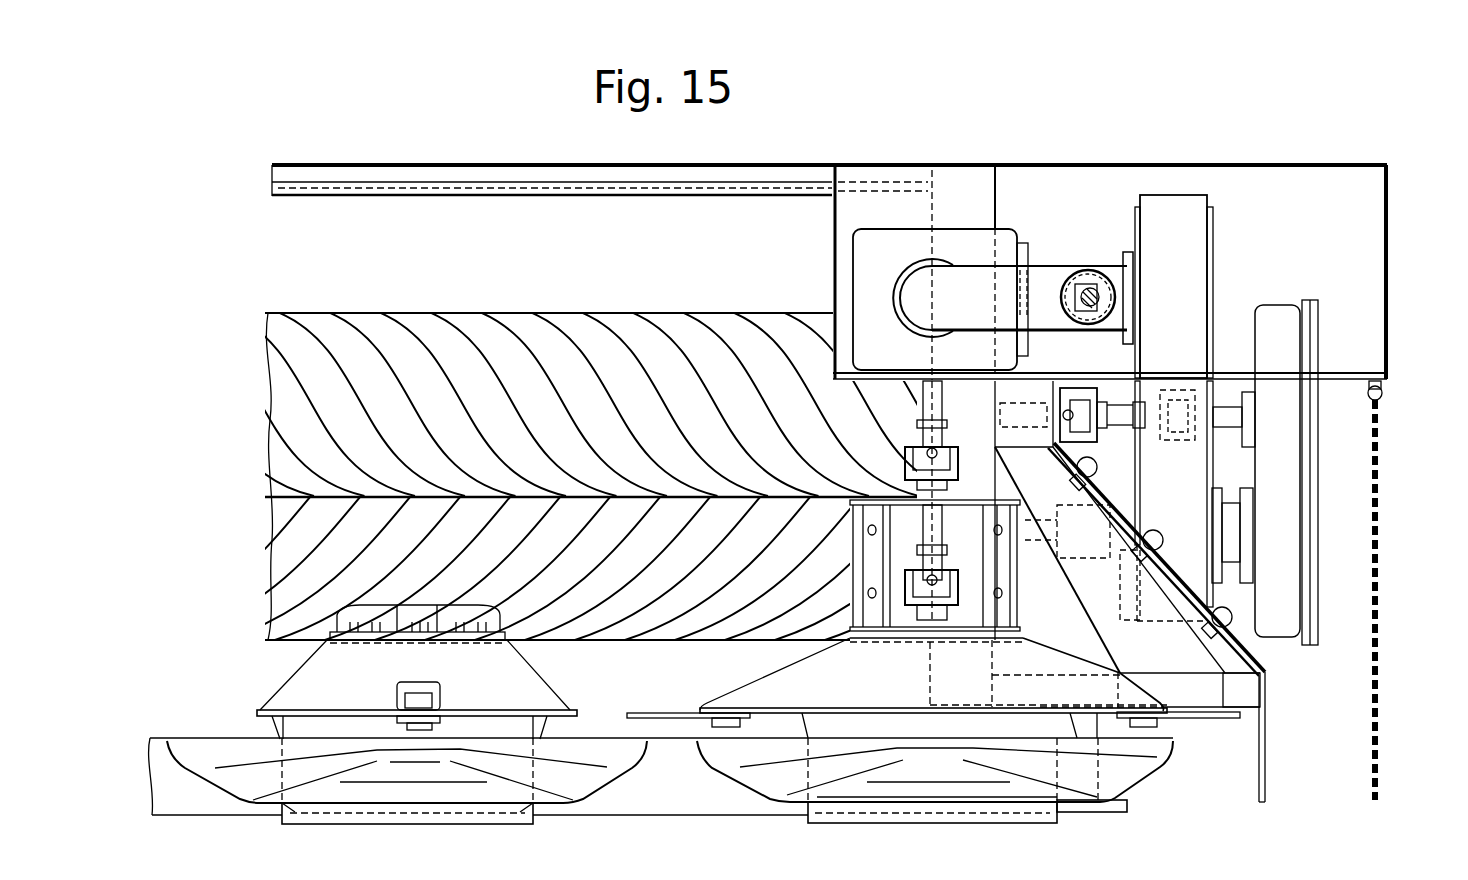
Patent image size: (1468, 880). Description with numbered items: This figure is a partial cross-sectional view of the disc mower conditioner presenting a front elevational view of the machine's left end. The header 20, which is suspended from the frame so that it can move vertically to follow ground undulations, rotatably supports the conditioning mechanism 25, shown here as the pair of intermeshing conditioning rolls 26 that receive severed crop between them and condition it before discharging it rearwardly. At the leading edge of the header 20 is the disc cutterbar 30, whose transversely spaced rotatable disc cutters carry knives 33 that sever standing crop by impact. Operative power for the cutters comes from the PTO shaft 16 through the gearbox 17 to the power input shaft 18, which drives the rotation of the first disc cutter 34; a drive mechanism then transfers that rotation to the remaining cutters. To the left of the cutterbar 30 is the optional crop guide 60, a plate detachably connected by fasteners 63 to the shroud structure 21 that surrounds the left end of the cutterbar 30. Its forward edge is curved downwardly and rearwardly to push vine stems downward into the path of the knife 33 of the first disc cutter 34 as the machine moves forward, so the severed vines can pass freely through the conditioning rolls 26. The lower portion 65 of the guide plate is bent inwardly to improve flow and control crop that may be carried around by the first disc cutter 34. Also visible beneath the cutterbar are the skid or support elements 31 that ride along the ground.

The PTO shaft 16 is at (1095, 297).
The gearbox 17 is at (995, 232).
The power input shaft 18 is at (945, 437).
The header 20 is at (1237, 133).
The shroud structure 21 is at (1247, 660).
The conditioning mechanism 25 is at (243, 312).
The conditioning rolls 26 is at (268, 560).
The disc cutterbar 30 is at (240, 698).
The base block 31 is at (402, 816).
The knives 33 is at (670, 720).
The first disc cutter 34 is at (945, 695).
The crop guide 60 is at (1272, 674).
The fasteners 63 is at (1165, 538).
The lower portion 65 is at (1270, 757).